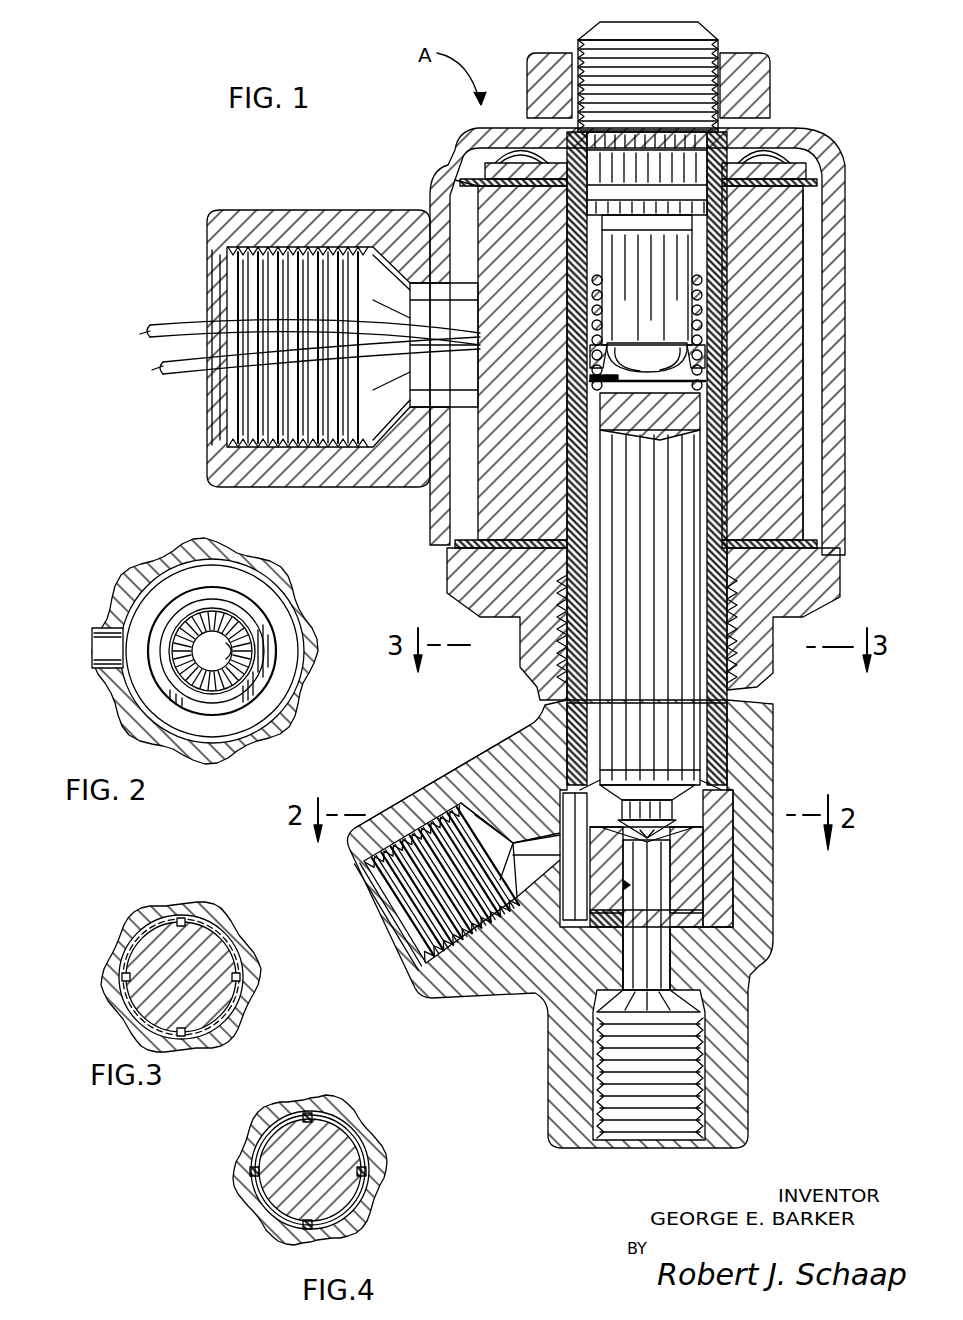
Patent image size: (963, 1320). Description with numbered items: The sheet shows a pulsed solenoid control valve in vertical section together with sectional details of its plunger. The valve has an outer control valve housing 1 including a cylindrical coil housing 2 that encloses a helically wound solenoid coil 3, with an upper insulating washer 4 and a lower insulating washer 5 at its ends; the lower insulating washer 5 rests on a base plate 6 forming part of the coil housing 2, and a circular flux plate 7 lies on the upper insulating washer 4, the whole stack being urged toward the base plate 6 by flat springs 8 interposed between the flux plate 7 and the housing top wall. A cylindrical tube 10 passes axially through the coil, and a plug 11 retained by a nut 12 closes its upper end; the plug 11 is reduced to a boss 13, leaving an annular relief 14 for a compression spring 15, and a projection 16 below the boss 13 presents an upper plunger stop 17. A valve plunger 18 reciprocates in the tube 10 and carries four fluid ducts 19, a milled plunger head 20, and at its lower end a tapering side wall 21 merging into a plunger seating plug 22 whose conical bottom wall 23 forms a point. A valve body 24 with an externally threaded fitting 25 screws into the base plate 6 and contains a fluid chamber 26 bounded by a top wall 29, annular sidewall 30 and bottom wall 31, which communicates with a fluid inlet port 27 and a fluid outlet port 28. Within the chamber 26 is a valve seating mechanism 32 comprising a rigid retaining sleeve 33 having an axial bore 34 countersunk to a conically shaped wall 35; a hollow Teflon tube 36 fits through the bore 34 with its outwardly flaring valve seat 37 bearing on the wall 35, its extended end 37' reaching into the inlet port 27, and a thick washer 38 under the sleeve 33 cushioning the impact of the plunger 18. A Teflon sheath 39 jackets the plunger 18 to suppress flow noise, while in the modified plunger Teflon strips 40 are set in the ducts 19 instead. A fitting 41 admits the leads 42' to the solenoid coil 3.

In FIG. 1, the outer control valve housing 1 is at (457, 130).
In FIG. 1, the coil housing 2 is at (835, 185).
In FIG. 1, the solenoid coil 3 is at (803, 222).
In FIG. 1, the upper insulating washer 4 is at (472, 178).
In FIG. 1, the lower insulating washer 5 is at (470, 545).
In FIG. 1, the base plate 6 is at (840, 580).
In FIG. 1, the flux plate 7 is at (797, 173).
In FIG. 1, the flat springs 8 is at (790, 163).
In FIG. 1, the cylindrical tube 10 is at (745, 502).
In FIG. 1, the plug 11 is at (598, 33).
In FIG. 1, the nut 12 is at (533, 58).
In FIG. 1, the boss 13 is at (665, 290).
In FIG. 1, the annular relief 14 is at (672, 345).
In FIG. 1, the compression spring 15 is at (700, 300).
In FIG. 1, the projection 16 is at (702, 375).
In FIG. 1, the upper plunger stop 17 is at (700, 363).
In FIG. 1, the valve plunger 18 is at (675, 453).
In FIG. 3, the valve plunger 18 is at (223, 1003).
In FIG. 4, the valve plunger 18 is at (335, 1143).
In FIG. 1, the fluid ducts 19 is at (715, 483).
In FIG. 3, the fluid ducts 19 is at (182, 920).
In FIG. 4, the fluid ducts 19 is at (295, 1125).
In FIG. 1, the plunger head 20 is at (612, 389).
In FIG. 1, the tapering side wall 21 is at (672, 797).
In FIG. 1, the plunger seating plug 22 is at (665, 812).
In FIG. 1, the bottom wall 23 is at (660, 822).
In FIG. 1, the valve body 24 is at (775, 712).
In FIG. 2, the valve body 24 is at (313, 640).
In FIG. 3, the valve body 24 is at (133, 918).
In FIG. 4, the valve body 24 is at (343, 1113).
In FIG. 1, the externally threaded fitting 25 is at (730, 653).
In FIG. 1, the fluid chamber 26 is at (548, 722).
In FIG. 1, the fluid inlet port 27 is at (623, 1130).
In FIG. 1, the fluid outlet port 28 is at (413, 963).
In FIG. 2, the fluid outlet port 28 is at (97, 630).
In FIG. 1, the top wall 29 is at (703, 787).
In FIG. 1, the annular sidewall 30 is at (723, 918).
In FIG. 2, the annular sidewall 30 is at (203, 578).
In FIG. 1, the bottom wall 31 is at (703, 930).
In FIG. 1, the valve seating mechanism 32 is at (708, 850).
In FIG. 2, the valve seating mechanism 32 is at (237, 593).
In FIG. 1, the retaining sleeve 33 is at (583, 810).
In FIG. 1, the axial bore 34 is at (672, 870).
In FIG. 1, the conically shaped wall 35 is at (662, 828).
In FIG. 1, the hollow tube 36 is at (668, 885).
In FIG. 2, the hollow tube 36 is at (228, 657).
In FIG. 1, the valve seat 37 is at (542, 895).
In FIG. 2, the valve seat 37 is at (195, 608).
In FIG. 1, the extended end 37' is at (713, 963).
In FIG. 1, the washer 38 is at (597, 910).
In FIG. 3, the Teflon sheath 39 is at (240, 950).
In FIG. 4, the Teflon strips 40 is at (309, 1115).
In FIG. 1, the fitting 41 is at (210, 233).
In FIG. 1, the leads 42' is at (289, 347).